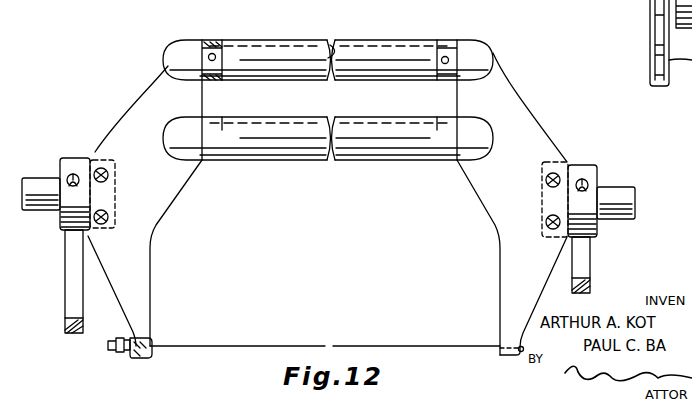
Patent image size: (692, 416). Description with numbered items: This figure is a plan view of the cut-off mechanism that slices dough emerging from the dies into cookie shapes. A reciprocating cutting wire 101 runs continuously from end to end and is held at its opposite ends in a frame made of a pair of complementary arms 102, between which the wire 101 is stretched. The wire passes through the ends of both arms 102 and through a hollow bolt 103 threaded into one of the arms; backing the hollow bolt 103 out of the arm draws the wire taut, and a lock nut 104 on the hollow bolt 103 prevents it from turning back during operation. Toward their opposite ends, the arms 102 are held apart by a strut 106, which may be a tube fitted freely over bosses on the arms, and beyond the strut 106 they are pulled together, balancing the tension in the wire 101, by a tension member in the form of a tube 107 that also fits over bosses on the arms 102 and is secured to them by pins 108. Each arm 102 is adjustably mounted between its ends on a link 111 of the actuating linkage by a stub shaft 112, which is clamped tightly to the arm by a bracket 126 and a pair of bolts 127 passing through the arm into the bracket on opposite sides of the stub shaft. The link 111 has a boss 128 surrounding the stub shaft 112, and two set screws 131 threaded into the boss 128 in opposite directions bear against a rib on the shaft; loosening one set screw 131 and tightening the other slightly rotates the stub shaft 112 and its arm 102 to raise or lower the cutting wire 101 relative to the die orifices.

The cutting wire 101 is at (259, 345).
The arms 102 is at (152, 297).
The hollow bolt 103 is at (118, 352).
The lock nut 104 is at (134, 358).
The strut 106 is at (302, 161).
The tube 107 is at (307, 38).
The pins 108 is at (214, 52).
The link 111 is at (68, 314).
The stub shaft 112 is at (38, 178).
The bracket 126 is at (100, 229).
The bolts 127 is at (108, 215).
The boss 128 is at (62, 222).
The set screws 131 is at (72, 172).